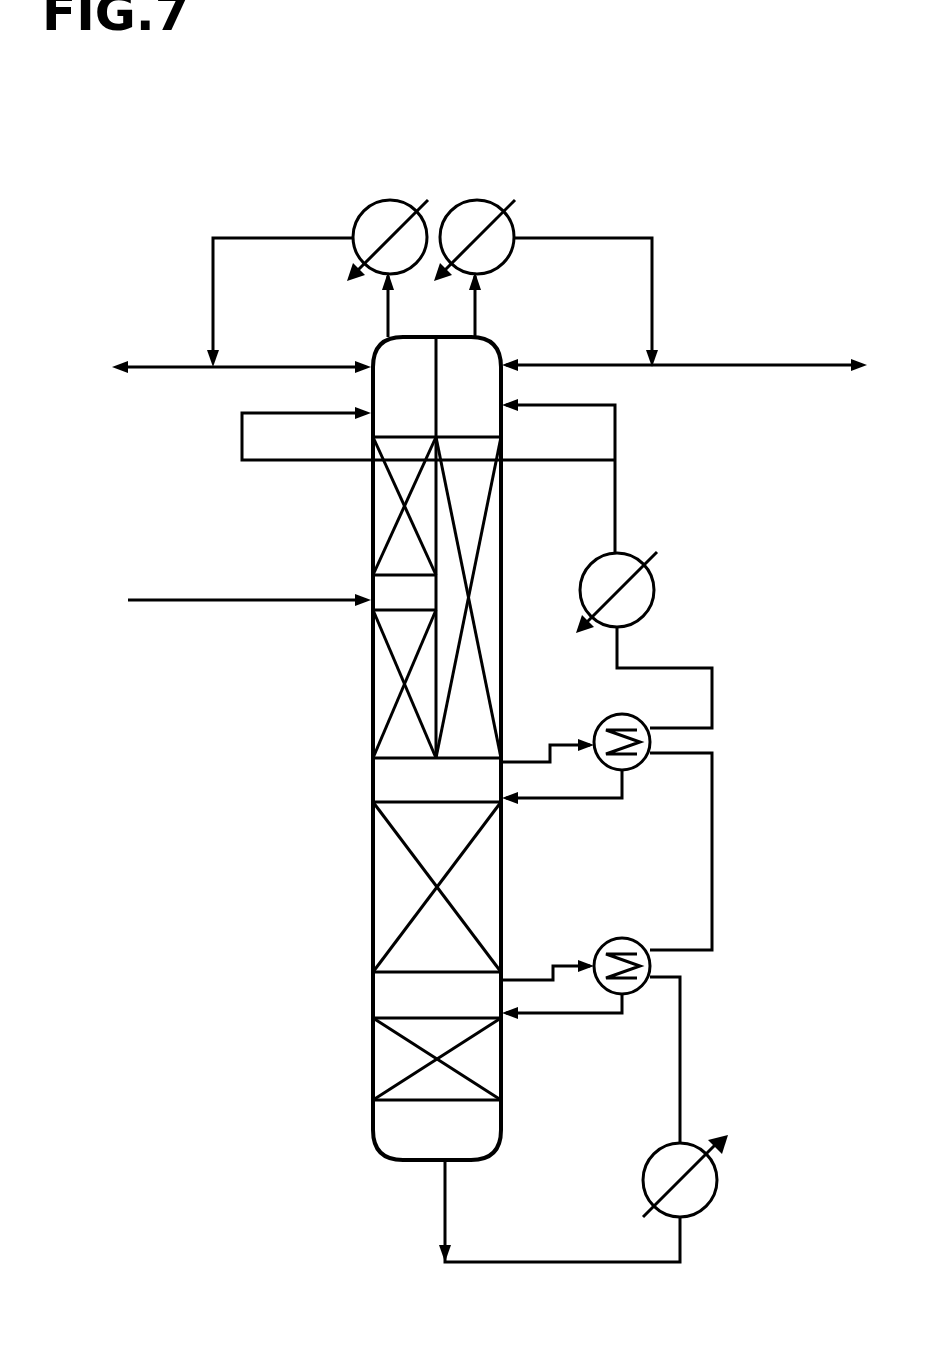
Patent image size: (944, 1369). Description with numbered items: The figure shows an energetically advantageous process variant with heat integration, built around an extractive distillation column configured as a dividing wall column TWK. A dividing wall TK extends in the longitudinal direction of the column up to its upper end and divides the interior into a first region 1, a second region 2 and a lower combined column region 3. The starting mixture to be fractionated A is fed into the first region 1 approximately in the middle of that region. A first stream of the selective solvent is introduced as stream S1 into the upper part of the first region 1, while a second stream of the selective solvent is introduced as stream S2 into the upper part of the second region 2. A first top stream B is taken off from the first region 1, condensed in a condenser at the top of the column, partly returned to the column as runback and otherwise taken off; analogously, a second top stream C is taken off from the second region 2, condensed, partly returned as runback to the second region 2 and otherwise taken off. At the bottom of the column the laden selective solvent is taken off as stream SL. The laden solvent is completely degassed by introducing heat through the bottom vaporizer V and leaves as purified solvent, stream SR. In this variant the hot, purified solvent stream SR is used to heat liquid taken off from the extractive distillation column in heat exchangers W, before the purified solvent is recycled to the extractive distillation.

The first region 1 is at (390, 604).
The second region 2 is at (465, 528).
The lower combined column region 3 is at (392, 926).
The dividing wall TK is at (435, 707).
The dividing wall column TWK is at (373, 790).
The heat exchangers W is at (628, 764).
The bottom vaporizer V is at (697, 1202).
The starting mixture to be fractionated A is at (249, 579).
The first top stream B is at (270, 286).
The second top stream C is at (650, 285).
The first stream of selective solvent S1 is at (428, 418).
The second stream of selective solvent S2 is at (607, 549).
The laden selective solvent stream SL is at (559, 1211).
The purified solvent stream SR is at (688, 1060).